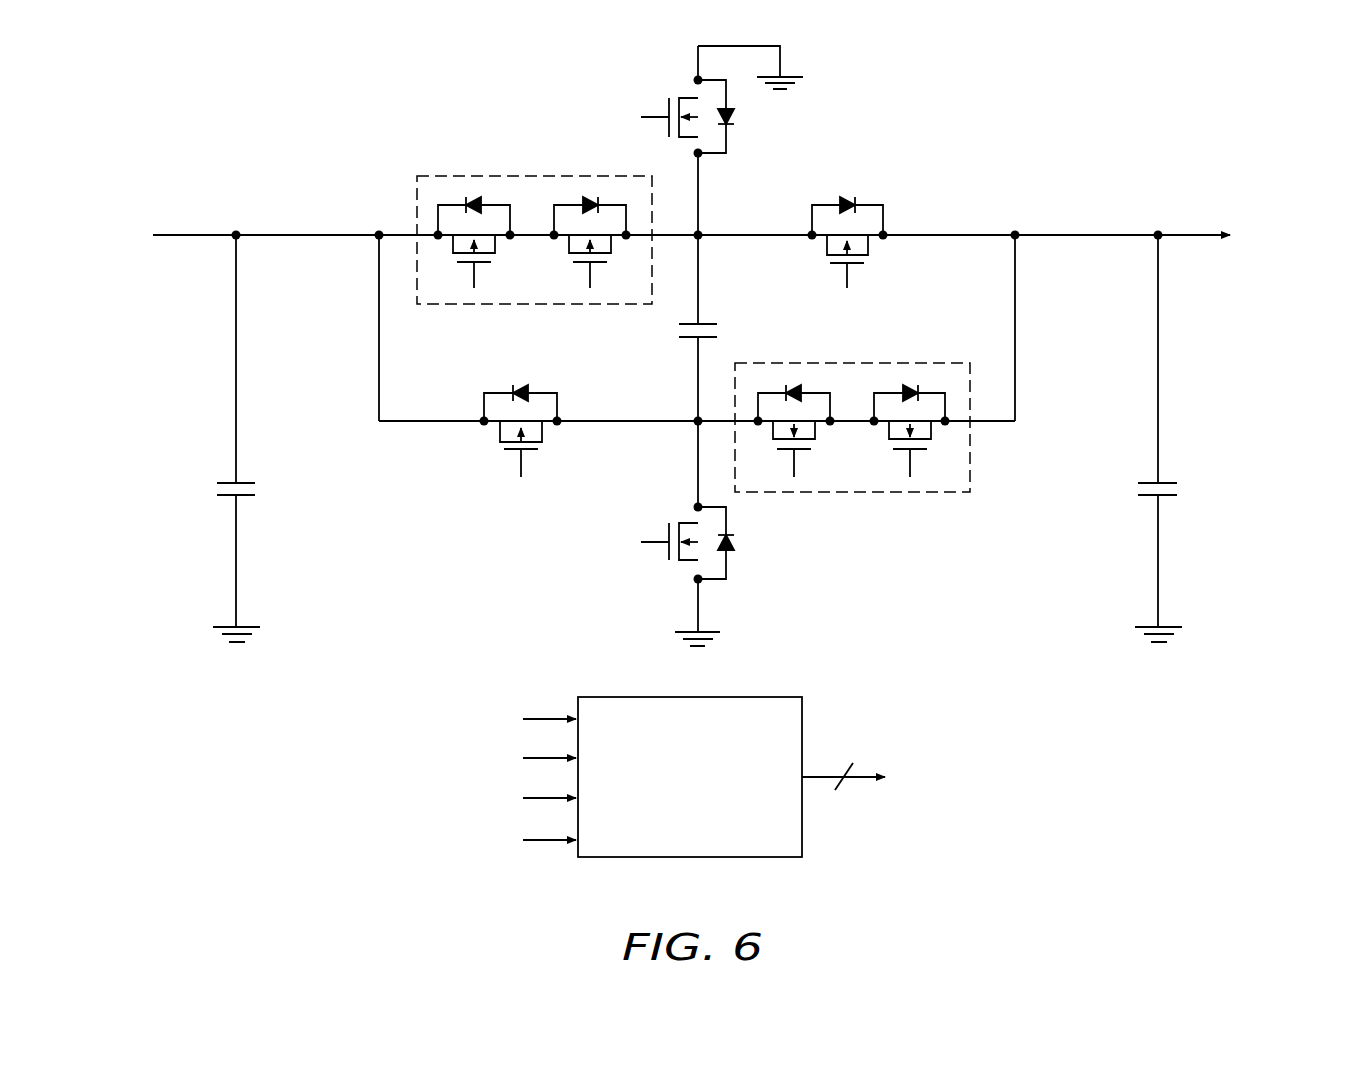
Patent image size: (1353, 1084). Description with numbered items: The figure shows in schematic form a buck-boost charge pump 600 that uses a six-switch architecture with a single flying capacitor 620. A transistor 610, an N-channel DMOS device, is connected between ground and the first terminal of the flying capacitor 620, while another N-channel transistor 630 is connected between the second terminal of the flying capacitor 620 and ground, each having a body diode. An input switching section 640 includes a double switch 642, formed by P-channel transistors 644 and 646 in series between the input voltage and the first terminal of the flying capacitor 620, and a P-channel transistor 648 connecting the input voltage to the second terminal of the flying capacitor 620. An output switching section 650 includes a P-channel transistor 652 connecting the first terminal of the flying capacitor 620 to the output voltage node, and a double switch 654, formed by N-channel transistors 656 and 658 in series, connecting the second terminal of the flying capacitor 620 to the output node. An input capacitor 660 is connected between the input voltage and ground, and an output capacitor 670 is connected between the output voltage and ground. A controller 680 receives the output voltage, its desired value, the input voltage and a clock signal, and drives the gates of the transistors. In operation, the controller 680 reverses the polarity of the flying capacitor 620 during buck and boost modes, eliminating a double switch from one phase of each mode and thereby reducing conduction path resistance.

The buck-boost charge pump 600 is at (208, 84).
The transistor 610 is at (684, 97).
The flying capacitor 620 is at (705, 320).
The transistor 630 is at (684, 522).
The input switching section 640 is at (413, 112).
The double switch 642 is at (462, 176).
The transistor 644 is at (455, 245).
The transistor 646 is at (571, 245).
The transistor 648 is at (498, 437).
The output switching section 650 is at (910, 143).
The transistor 652 is at (829, 245).
The double switch 654 is at (868, 362).
The transistor 656 is at (774, 432).
The transistor 658 is at (890, 432).
The input capacitor 660 is at (220, 483).
The output capacitor 670 is at (1175, 483).
The controller 680 is at (605, 696).